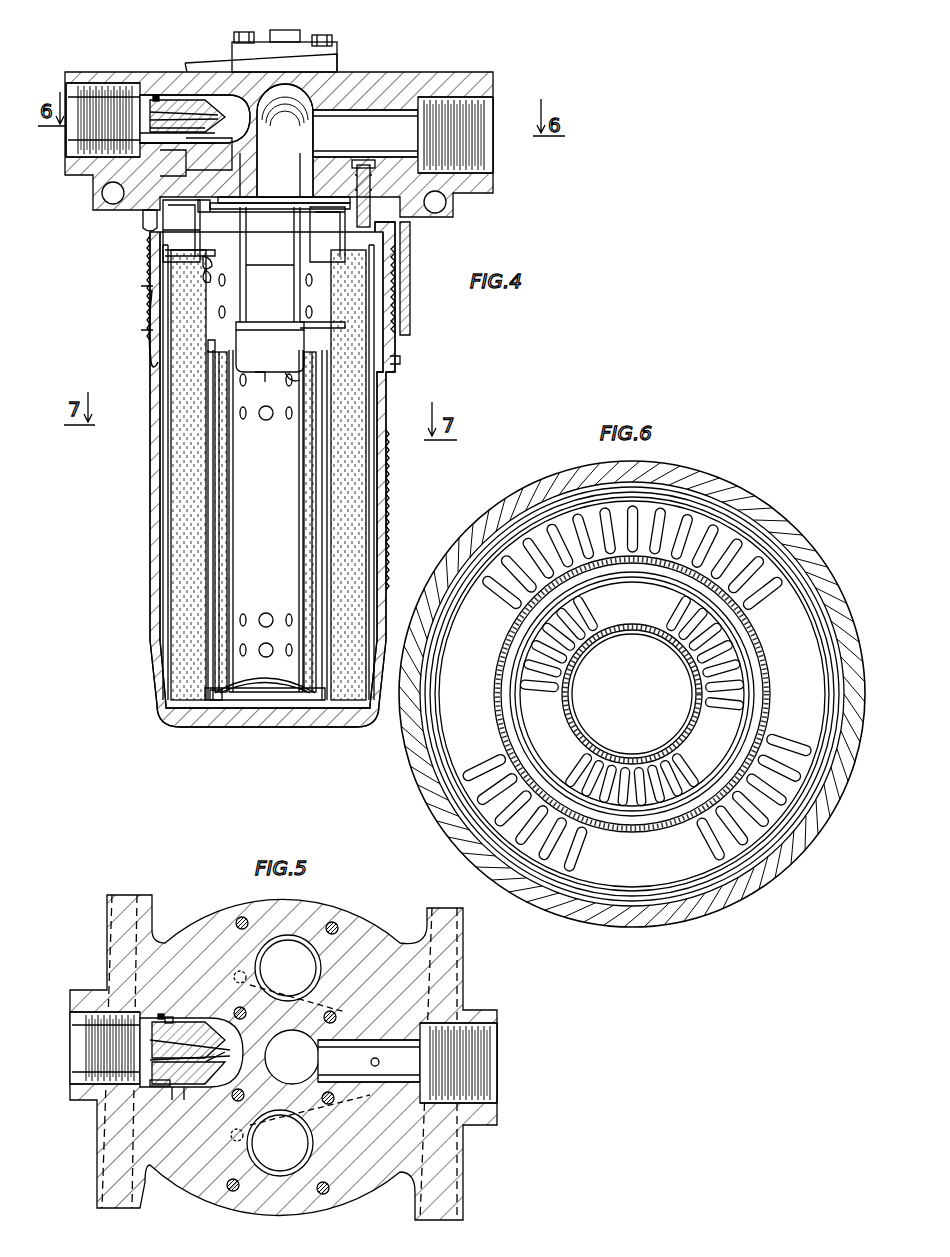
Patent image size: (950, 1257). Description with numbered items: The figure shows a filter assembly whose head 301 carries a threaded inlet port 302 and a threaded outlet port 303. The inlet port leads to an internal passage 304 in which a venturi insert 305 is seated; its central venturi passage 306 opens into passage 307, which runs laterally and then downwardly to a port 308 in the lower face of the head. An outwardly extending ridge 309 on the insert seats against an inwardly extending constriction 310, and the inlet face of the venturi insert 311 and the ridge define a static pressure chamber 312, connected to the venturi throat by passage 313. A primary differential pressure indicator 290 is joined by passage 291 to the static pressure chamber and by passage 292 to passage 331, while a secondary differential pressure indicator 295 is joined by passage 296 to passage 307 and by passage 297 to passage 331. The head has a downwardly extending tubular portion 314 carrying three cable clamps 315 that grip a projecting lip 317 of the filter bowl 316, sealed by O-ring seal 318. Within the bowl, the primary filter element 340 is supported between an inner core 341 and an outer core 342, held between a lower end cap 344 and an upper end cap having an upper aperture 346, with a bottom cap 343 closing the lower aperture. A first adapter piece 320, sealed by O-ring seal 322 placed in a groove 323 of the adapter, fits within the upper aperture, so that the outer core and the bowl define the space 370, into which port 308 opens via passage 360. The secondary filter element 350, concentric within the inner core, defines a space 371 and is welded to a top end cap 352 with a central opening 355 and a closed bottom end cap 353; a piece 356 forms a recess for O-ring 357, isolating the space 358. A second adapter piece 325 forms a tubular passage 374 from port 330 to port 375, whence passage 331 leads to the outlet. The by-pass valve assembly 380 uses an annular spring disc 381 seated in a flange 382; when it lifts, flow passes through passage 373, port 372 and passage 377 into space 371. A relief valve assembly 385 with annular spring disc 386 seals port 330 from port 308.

In FIG. 5, the primary differential pressure indicator 290 is at (307, 979).
In FIG. 5, the passage 291 is at (228, 988).
In FIG. 5, the passage 292 is at (353, 1006).
In FIG. 4, the secondary differential pressure indicator 295 is at (306, 32).
In FIG. 5, the secondary differential pressure indicator 295 is at (299, 1154).
In FIG. 5, the passage 296 is at (235, 1128).
In FIG. 5, the passage 297 is at (356, 1112).
In FIG. 4, the head 301 is at (410, 80).
In FIG. 5, the head 301 is at (222, 915).
In FIG. 4, the threaded inlet port 302 is at (80, 82).
In FIG. 5, the threaded inlet port 302 is at (70, 1025).
In FIG. 4, the threaded outlet port 303 is at (490, 116).
In FIG. 5, the threaded outlet port 303 is at (493, 1052).
In FIG. 4, the internal passage 304 is at (95, 128).
In FIG. 5, the internal passage 304 is at (138, 1060).
In FIG. 4, the venturi insert 305 is at (158, 100).
In FIG. 5, the venturi insert 305 is at (172, 1014).
In FIG. 4, the venturi passage 306 is at (240, 112).
In FIG. 5, the venturi passage 306 is at (240, 1040).
In FIG. 4, the passage 307 is at (265, 132).
In FIG. 5, the passage 307 is at (262, 1053).
In FIG. 4, the port 308 is at (172, 176).
In FIG. 4, the ridge 309 is at (186, 63).
In FIG. 5, the ridge 309 is at (184, 1088).
In FIG. 4, the constriction 310 is at (200, 97).
In FIG. 5, the constriction 310 is at (200, 1098).
In FIG. 4, the inlet face of the venturi insert 311 is at (154, 94).
In FIG. 5, the inlet face of the venturi insert 311 is at (162, 1016).
In FIG. 4, the static pressure chamber 312 is at (188, 145).
In FIG. 5, the static pressure chamber 312 is at (162, 1087).
In FIG. 4, the passage 313 is at (180, 141).
In FIG. 5, the passage 313 is at (163, 1053).
In FIG. 4, the tubular portion 314 is at (400, 265).
In FIG. 4, the cable clamps 315 is at (150, 316).
In FIG. 4, the filter bowl 316 is at (380, 550).
In FIG. 6, the filter bowl 316 is at (522, 488).
In FIG. 4, the projecting lip 317 is at (398, 310).
In FIG. 4, the O-ring seal 318 is at (145, 222).
In FIG. 4, the first adapter piece 320 is at (210, 225).
In FIG. 4, the O-ring seal 322 is at (203, 262).
In FIG. 4, the seal ring 323 is at (203, 276).
In FIG. 4, the second adapter piece 325 is at (150, 306).
In FIG. 4, the port 330 is at (273, 264).
In FIG. 5, the port 330 is at (369, 1061).
In FIG. 4, the passage 331 is at (340, 112).
In FIG. 5, the passage 331 is at (418, 1073).
In FIG. 4, the primary filter element 340 is at (180, 410).
In FIG. 6, the primary filter element 340 is at (555, 548).
In FIG. 4, the inner core 341 is at (234, 470).
In FIG. 6, the inner core 341 is at (578, 740).
In FIG. 4, the outer core 342 is at (205, 382).
In FIG. 6, the outer core 342 is at (506, 688).
In FIG. 4, the bottom cap 343 is at (212, 708).
In FIG. 4, the lower end cap 344 is at (445, 278).
In FIG. 4, the upper aperture 346 is at (165, 250).
In FIG. 4, the secondary filter element 350 is at (222, 532).
In FIG. 6, the secondary filter element 350 is at (678, 617).
In FIG. 4, the top end cap 352 is at (208, 343).
In FIG. 4, the bottom end cap 353 is at (240, 705).
In FIG. 4, the central opening 355 is at (270, 351).
In FIG. 4, the piece 356 is at (347, 325).
In FIG. 4, the O-ring 357 is at (270, 323).
In FIG. 4, the space 358 is at (282, 577).
In FIG. 6, the space 358 is at (650, 686).
In FIG. 4, the passage 360 is at (270, 166).
In FIG. 4, the space 370 is at (163, 479).
In FIG. 6, the space 370 is at (450, 606).
In FIG. 4, the space 371 is at (213, 550).
In FIG. 6, the space 371 is at (620, 807).
In FIG. 4, the port 372 is at (240, 268).
In FIG. 4, the passage 373 is at (346, 240).
In FIG. 4, the tubular passage 374 is at (298, 289).
In FIG. 4, the port 375 is at (277, 378).
In FIG. 4, the passage 377 is at (232, 305).
In FIG. 4, the pressure-sensitive valve assembly 380 is at (322, 195).
In FIG. 4, the annular spring disc 381 is at (236, 203).
In FIG. 4, the flange 382 is at (232, 198).
In FIG. 4, the relief valve assembly 385 is at (287, 205).
In FIG. 4, the annular spring disc 386 is at (350, 163).